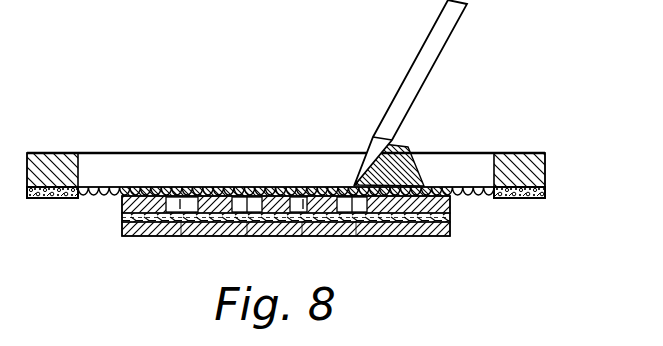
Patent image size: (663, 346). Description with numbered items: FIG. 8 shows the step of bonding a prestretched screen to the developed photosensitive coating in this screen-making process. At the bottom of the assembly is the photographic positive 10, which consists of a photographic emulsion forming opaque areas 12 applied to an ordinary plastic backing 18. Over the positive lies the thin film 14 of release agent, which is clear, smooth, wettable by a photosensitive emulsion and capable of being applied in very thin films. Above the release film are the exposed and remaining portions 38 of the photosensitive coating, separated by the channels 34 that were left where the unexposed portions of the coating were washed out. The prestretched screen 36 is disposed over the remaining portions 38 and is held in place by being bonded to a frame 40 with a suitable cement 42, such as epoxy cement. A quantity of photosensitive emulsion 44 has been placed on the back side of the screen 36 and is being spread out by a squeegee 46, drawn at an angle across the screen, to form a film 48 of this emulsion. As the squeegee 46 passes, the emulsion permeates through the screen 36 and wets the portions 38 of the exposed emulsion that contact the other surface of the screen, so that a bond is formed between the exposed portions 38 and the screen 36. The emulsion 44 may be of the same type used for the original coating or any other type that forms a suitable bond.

The photographic positive 10 is at (402, 235).
The opaque area 12 is at (247, 222).
The film of release agent 14 is at (452, 217).
The plastic backing 18 is at (122, 229).
The channels 34 is at (180, 197).
The prestretched screen 36 is at (480, 196).
The exposed and remaining portions of the photosensitive coating 38 is at (122, 202).
The frame 40 is at (546, 171).
The cement 42 is at (544, 193).
The photosensitive emulsion 44 is at (399, 145).
The squeegee 46 is at (431, 62).
The film of emulsion 48 is at (209, 195).